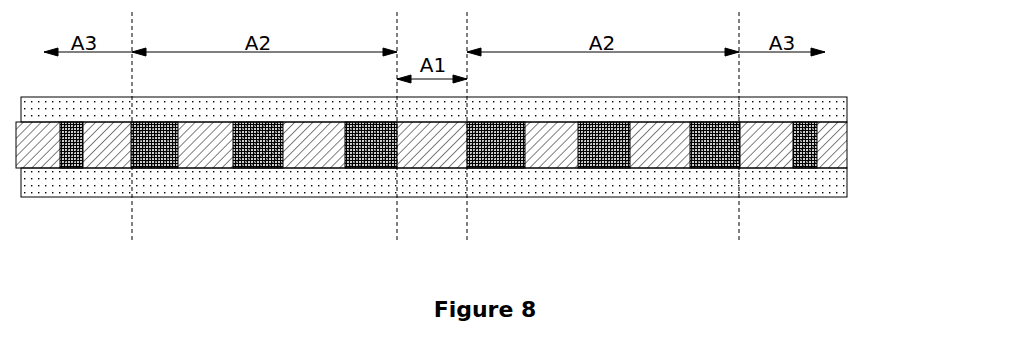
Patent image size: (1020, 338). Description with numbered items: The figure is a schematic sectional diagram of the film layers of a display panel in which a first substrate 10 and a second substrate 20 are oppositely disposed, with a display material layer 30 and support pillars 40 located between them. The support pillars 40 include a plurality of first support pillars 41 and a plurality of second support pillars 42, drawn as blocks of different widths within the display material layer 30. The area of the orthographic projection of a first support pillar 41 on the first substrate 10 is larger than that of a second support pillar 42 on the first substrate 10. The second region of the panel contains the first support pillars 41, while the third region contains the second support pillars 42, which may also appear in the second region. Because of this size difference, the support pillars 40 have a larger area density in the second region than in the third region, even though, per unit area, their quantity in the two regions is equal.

The first substrate 10 is at (847, 188).
The second substrate 20 is at (847, 113).
The display material layer 30 is at (846, 155).
The support pillars 40 is at (438, 198).
The first support pillars 41 is at (258, 168).
The second support pillars 42 is at (72, 168).